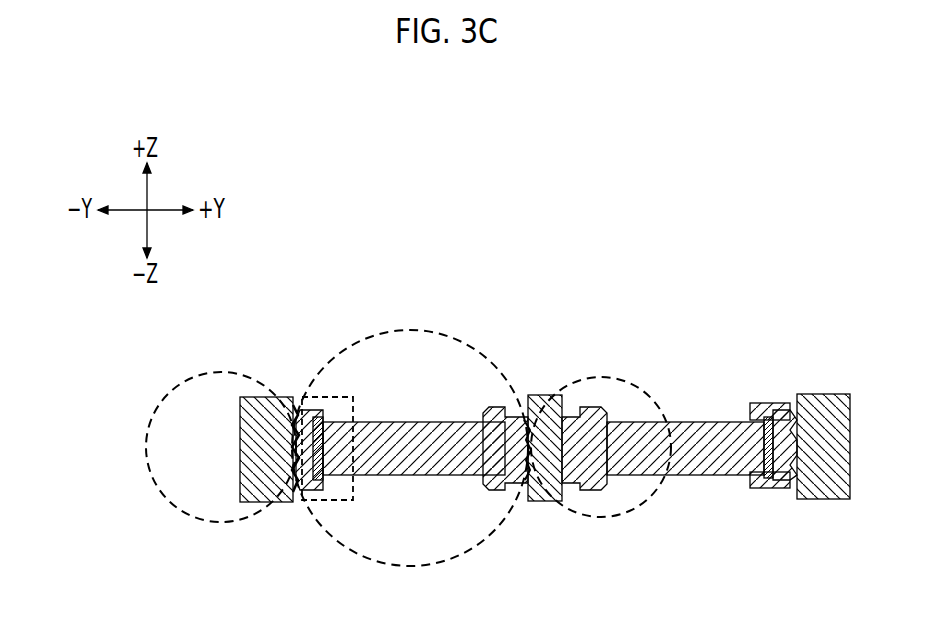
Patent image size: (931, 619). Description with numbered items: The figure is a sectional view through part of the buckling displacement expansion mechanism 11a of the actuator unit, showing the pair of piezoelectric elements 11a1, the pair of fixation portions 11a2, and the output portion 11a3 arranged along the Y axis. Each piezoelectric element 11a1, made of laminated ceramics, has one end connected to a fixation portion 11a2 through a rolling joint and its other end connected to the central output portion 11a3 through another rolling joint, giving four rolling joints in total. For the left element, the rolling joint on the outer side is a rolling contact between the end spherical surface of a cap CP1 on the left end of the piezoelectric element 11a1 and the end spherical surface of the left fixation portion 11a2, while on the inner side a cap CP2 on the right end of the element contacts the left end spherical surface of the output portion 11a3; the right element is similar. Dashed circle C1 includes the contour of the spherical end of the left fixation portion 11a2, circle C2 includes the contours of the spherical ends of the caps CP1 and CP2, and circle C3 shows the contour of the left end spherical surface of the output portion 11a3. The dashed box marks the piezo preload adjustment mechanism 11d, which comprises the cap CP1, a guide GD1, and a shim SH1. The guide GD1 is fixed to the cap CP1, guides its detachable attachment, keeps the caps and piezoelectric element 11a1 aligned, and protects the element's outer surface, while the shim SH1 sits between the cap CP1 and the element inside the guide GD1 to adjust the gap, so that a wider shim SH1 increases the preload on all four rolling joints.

The buckling displacement expansion mechanism 11a is at (730, 290).
The piezoelectric element 11a1 is at (443, 425).
The fixation portion 11a2 is at (244, 397).
The output portion 11a3 is at (537, 397).
The piezo preload adjustment mechanism 11d is at (320, 396).
The shim SH1 is at (328, 408).
The guide GD1 is at (330, 497).
The cap CP1 is at (296, 482).
The cap CP2 is at (531, 480).
The circle C1 is at (176, 387).
The circle C2 is at (338, 355).
The circle C3 is at (641, 386).